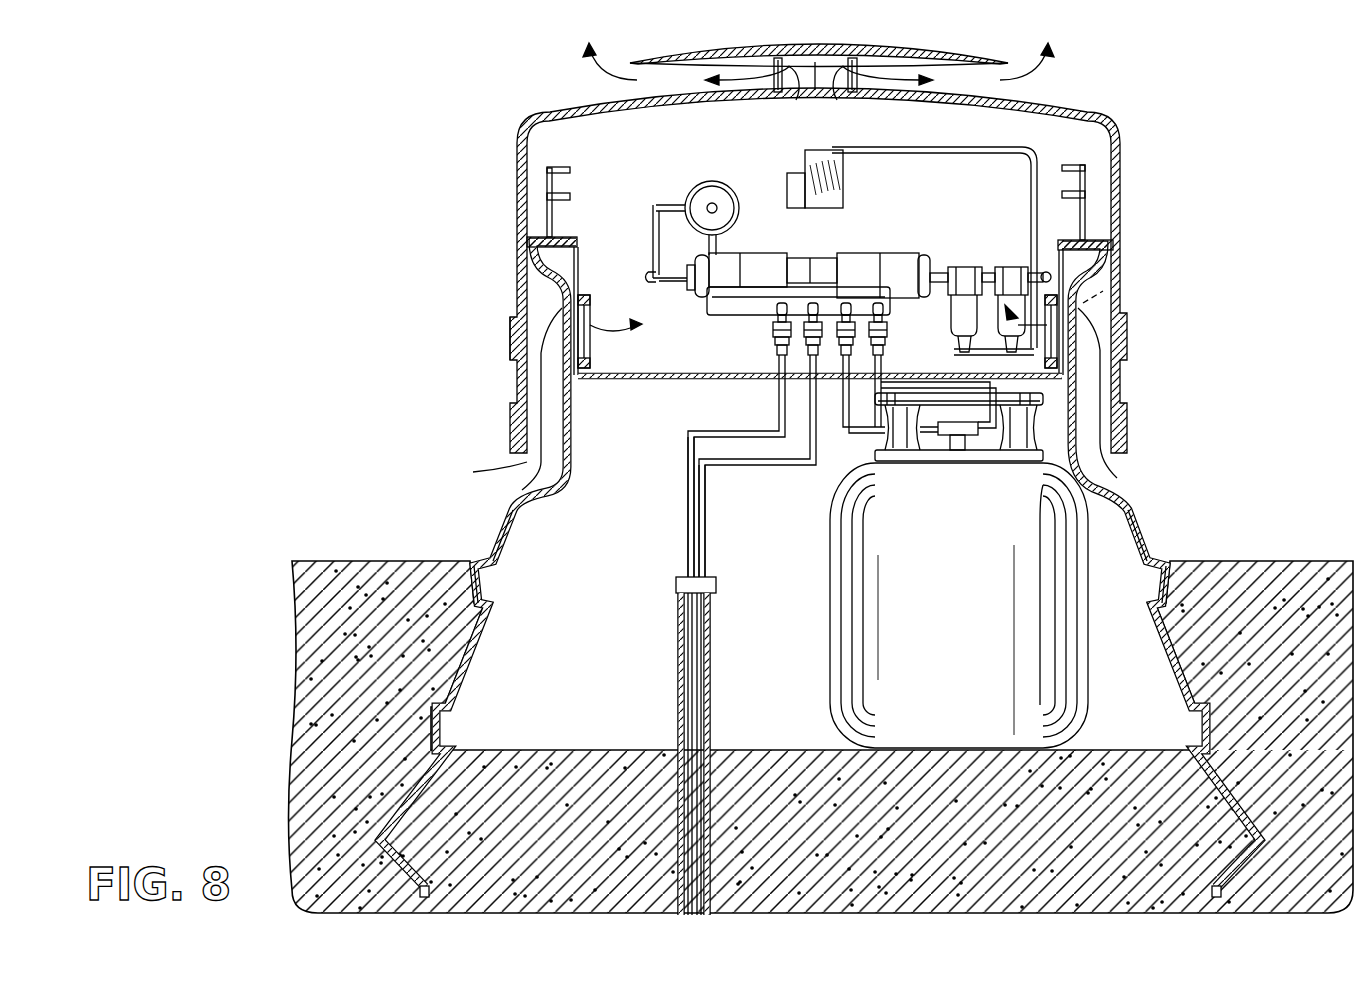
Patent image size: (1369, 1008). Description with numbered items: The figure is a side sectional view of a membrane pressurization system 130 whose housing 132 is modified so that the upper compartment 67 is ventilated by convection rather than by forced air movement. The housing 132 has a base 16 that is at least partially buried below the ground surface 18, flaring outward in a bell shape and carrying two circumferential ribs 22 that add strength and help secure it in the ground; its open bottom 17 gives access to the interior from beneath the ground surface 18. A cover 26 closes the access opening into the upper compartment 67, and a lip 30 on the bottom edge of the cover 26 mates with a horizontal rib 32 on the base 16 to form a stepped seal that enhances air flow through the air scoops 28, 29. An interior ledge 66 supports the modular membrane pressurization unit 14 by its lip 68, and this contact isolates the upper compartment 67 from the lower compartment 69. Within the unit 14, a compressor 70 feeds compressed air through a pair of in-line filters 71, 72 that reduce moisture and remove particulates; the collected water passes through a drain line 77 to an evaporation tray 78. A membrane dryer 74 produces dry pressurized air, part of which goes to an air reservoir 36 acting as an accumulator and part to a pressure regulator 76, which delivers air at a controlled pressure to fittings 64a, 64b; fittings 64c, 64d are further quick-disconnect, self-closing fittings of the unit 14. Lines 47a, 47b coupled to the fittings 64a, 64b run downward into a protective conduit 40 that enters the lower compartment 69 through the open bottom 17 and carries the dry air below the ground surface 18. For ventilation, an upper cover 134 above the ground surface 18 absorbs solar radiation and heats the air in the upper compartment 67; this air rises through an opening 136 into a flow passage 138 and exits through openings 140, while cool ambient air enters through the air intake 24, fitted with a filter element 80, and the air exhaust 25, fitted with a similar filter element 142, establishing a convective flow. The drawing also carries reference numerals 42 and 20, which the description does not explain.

The membrane pressurization system 130 is at (322, 157).
The mounting bracket 42 is at (548, 180).
The modular membrane pressurization unit 14 is at (650, 172).
The upper cover 134 is at (680, 62).
The opening 136 is at (790, 100).
The flow passage 138 is at (818, 70).
The openings 140 is at (850, 75).
The pressure regulator 76 is at (708, 181).
The evaporation tray 78 is at (716, 150).
The drain line 77 is at (928, 148).
The cover 26 is at (1110, 114).
The upper compartment 67 is at (903, 186).
The lip 68 is at (560, 237).
The compressor 70 is at (843, 200).
The membrane dryer 74 is at (885, 253).
The in-line filter 71 is at (952, 266).
The in-line filter 72 is at (1000, 266).
The interior ledge 66 is at (1106, 236).
The filter element 142 is at (597, 307).
The air exhaust 25 is at (563, 310).
The filter element 80 is at (1110, 283).
The air intake 24 is at (1065, 318).
The air scoop 29 is at (538, 380).
The horizontal rib 32 is at (514, 421).
The lip 30 is at (512, 458).
The air scoop 28 is at (1105, 384).
The fitting 64a is at (776, 340).
The fitting 64b is at (780, 350).
The fitting 64c is at (843, 362).
The fitting 64d is at (886, 345).
The housing 132 is at (1152, 523).
The line 47a is at (686, 512).
The line 47b is at (706, 547).
The circumferential ribs 22 is at (1168, 580).
The ground surface 18 is at (1258, 567).
The lower compartment 69 is at (805, 488).
The protective conduit 40 is at (680, 628).
The air reservoir 36 is at (952, 589).
The base 16 is at (1175, 669).
The anchor foot 20 is at (1230, 810).
The open bottom 17 is at (428, 884).